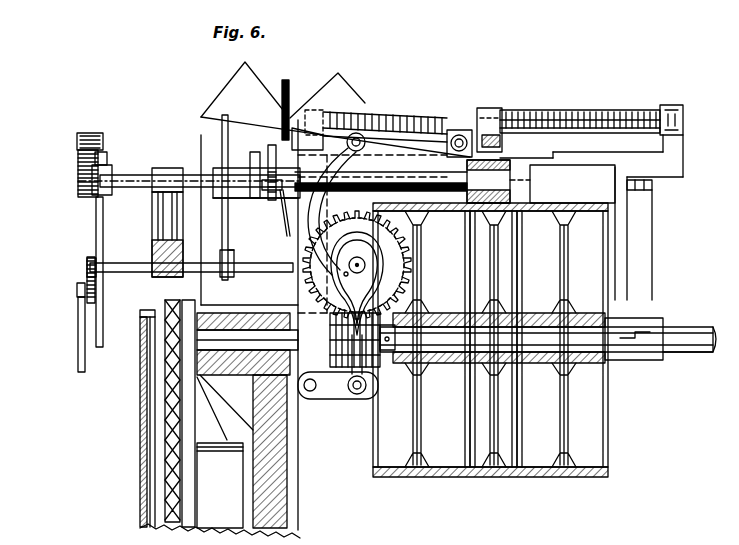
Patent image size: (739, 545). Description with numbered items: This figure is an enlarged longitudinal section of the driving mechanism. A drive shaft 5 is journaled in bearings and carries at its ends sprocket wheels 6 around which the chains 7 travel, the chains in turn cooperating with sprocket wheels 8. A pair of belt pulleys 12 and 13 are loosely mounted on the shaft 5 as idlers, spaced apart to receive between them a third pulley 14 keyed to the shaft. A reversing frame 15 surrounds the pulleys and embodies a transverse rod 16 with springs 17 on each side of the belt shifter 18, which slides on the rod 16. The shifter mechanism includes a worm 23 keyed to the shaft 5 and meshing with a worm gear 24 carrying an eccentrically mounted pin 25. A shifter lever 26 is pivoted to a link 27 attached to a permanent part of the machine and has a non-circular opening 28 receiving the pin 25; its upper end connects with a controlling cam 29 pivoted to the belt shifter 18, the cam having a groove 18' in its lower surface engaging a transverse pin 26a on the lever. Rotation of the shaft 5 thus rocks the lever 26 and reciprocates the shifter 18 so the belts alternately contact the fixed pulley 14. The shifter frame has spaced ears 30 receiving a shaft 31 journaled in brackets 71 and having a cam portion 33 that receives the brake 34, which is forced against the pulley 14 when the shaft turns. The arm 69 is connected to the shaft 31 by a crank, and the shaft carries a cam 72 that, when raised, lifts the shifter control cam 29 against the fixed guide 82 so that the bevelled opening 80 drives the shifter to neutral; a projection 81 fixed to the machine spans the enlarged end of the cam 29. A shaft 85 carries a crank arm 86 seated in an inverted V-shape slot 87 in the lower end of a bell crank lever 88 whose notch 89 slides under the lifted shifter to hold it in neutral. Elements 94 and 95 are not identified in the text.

The drive shaft 5 is at (686, 328).
The sprocket wheel 6 is at (150, 375).
The chain 7 is at (200, 135).
The sprocket wheel 8 is at (470, 478).
The belt pulley 12 is at (424, 478).
The belt pulley 13 is at (560, 478).
The third pulley 14 is at (500, 478).
The reversing frame 15 is at (673, 163).
The transverse rod 16 is at (550, 118).
The spring 17 is at (410, 112).
The belt shifter 18 is at (477, 117).
The groove 18' is at (385, 112).
The worm 23 is at (370, 395).
The worm gear 24 is at (400, 282).
The pin 25 is at (374, 258).
The shifter lever 26 is at (323, 204).
The transverse pin 26a is at (363, 150).
The link 27 is at (332, 392).
The non-circular opening 28 is at (343, 275).
The controlling cam 29 is at (350, 100).
The ear 30 is at (467, 188).
The shaft 31 is at (135, 174).
The cam portion 33 is at (530, 181).
The brake 34 is at (478, 220).
The arm 69 is at (96, 232).
The bracket 71 is at (152, 218).
The cam 72 is at (252, 152).
The opening 80 is at (258, 90).
The projection 81 is at (290, 95).
The fixed guide 82 is at (78, 347).
The shaft 85 is at (135, 264).
The crank arm 86 is at (226, 280).
The inverted V-shape slot 87 is at (230, 252).
The bell crank lever 88 is at (222, 162).
The notch 89 is at (226, 118).
The rod 94 is at (286, 230).
The nut 95 is at (272, 200).